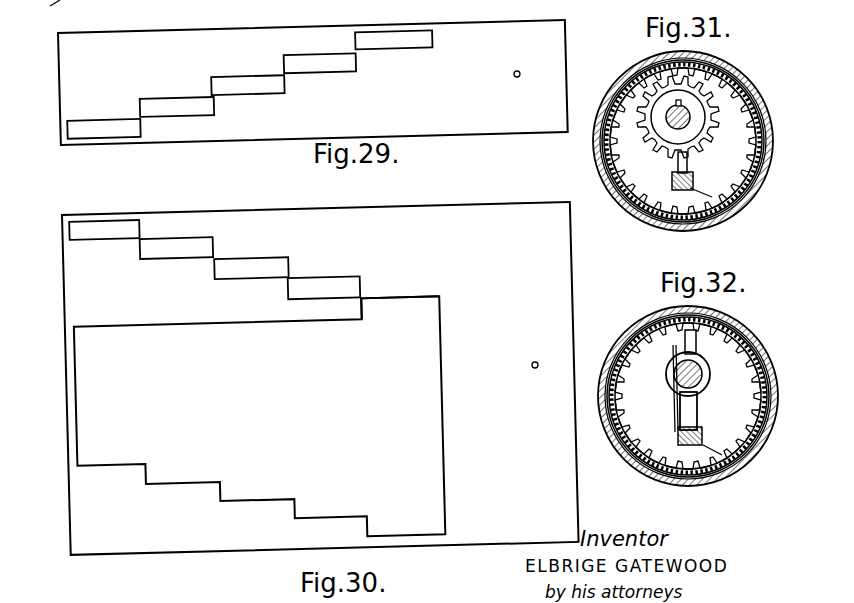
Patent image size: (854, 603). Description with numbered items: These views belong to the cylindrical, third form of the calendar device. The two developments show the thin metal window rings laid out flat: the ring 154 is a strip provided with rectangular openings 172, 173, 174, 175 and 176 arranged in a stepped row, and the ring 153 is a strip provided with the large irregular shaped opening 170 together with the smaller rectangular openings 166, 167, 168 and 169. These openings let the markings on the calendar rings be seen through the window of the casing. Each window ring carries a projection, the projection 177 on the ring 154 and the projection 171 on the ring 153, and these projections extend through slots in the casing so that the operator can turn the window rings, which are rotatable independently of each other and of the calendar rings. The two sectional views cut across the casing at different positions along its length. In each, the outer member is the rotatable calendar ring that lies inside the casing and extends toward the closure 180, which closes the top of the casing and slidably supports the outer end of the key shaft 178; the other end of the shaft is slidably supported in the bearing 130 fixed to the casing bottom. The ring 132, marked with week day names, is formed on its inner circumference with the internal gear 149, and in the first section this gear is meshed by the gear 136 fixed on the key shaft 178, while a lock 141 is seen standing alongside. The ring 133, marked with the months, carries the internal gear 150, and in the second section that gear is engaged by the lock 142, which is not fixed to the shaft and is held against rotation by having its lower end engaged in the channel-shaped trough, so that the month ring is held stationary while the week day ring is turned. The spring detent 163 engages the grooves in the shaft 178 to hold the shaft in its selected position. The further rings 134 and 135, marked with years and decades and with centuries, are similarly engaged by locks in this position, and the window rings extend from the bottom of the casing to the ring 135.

In FIG. 31, the bearing 130 is at (747, 207).
In FIG. 32, the bearing 130 is at (738, 463).
In FIG. 29, the rotatable ring 132 is at (245, 5).
In FIG. 31, the rotatable ring 132 is at (723, 72).
In FIG. 29, the rotatable ring 133 is at (477, 4).
In FIG. 32, the rotatable ring 133 is at (723, 483).
In FIG. 29, the rotatable ring 134 is at (535, 4).
In FIG. 29, the rotatable ring 135 is at (135, 12).
In FIG. 31, the gear 136 is at (663, 130).
In FIG. 31, the lock 141 is at (690, 163).
In FIG. 32, the lock 142 is at (688, 412).
In FIG. 31, the internal gear 149 is at (622, 87).
In FIG. 32, the internal gear 150 is at (632, 332).
In FIG. 30, the ring 153 is at (75, 282).
In FIG. 31, the ring 153 is at (760, 133).
In FIG. 32, the ring 153 is at (765, 385).
In FIG. 29, the ring 154 is at (70, 75).
In FIG. 32, the spring detent 163 is at (670, 410).
In FIG. 30, the rectangular opening 166 is at (113, 225).
In FIG. 30, the rectangular opening 167 is at (173, 245).
In FIG. 30, the rectangular opening 168 is at (240, 263).
In FIG. 30, the rectangular opening 169 is at (322, 278).
In FIG. 30, the irregular shaped opening 170 is at (405, 298).
In FIG. 30, the projection 171 is at (532, 370).
In FIG. 29, the rectangular opening 172 is at (97, 137).
In FIG. 29, the rectangular opening 173 is at (177, 113).
In FIG. 29, the rectangular opening 174 is at (247, 90).
In FIG. 29, the rectangular opening 175 is at (312, 60).
In FIG. 29, the rectangular opening 176 is at (363, 37).
In FIG. 29, the projection 177 is at (514, 78).
In FIG. 31, the key shaft 178 is at (693, 113).
In FIG. 32, the key shaft 178 is at (703, 370).
In FIG. 29, the closure 180 is at (63, 14).
In FIG. 32, the closure 180 is at (747, 332).